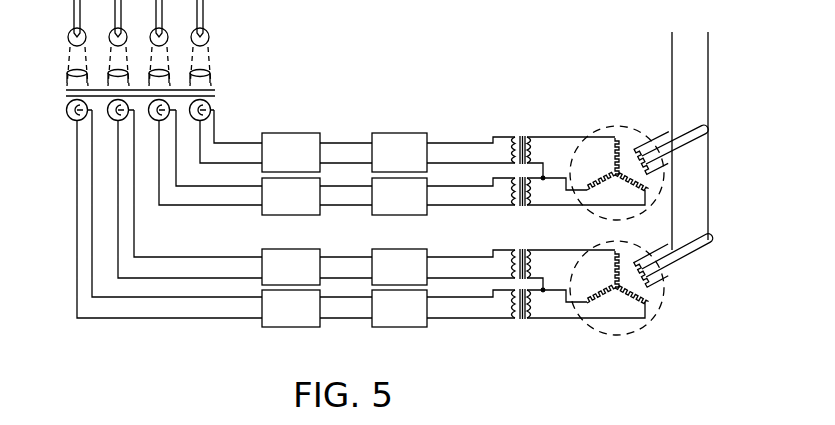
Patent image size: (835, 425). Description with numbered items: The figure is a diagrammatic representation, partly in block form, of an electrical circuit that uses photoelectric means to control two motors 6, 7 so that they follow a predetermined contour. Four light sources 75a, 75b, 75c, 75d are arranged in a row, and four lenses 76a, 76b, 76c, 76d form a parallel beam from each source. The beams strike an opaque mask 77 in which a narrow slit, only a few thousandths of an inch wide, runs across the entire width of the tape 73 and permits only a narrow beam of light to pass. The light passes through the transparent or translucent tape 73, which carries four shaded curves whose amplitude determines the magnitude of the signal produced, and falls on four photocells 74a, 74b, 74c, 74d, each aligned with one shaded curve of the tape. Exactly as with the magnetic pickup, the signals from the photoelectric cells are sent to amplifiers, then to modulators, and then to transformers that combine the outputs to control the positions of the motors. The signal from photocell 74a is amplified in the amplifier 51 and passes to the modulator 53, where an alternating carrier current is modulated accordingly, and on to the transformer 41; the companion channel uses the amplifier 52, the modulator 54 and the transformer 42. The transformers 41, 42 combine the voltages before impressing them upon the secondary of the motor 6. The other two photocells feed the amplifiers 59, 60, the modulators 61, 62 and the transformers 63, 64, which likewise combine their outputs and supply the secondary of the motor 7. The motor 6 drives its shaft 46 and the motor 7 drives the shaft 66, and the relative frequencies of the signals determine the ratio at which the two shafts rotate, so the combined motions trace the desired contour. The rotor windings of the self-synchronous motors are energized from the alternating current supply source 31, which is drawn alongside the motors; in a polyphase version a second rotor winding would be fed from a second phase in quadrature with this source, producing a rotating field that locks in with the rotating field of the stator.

The light source 75a is at (207, 33).
The light source 75b is at (160, 30).
The light source 75c is at (115, 32).
The light source 75d is at (67, 35).
The lens 76a is at (208, 72).
The lens 76b is at (162, 68).
The lens 76c is at (112, 68).
The lens 76d is at (67, 72).
The opaque mask 77 is at (217, 91).
The tape 73 is at (217, 98).
The photoelectric cell 74a is at (212, 119).
The photoelectric cell 74b is at (158, 125).
The photoelectric cell 74c is at (108, 123).
The photoelectric cell 74d is at (67, 122).
The amplifier 51 is at (297, 133).
The amplifier 52 is at (287, 215).
The amplifier 59 is at (293, 246).
The amplifier 60 is at (277, 328).
The modulator 53 is at (410, 133).
The modulator 54 is at (393, 215).
The modulator 61 is at (400, 249).
The modulator 62 is at (392, 328).
The transformer 41 is at (522, 131).
The transformer 42 is at (523, 207).
The transformer 63 is at (522, 249).
The transformer 64 is at (520, 320).
The motor 6 is at (645, 211).
The motor 7 is at (648, 322).
The shaft 46 is at (694, 126).
The shaft 66 is at (686, 244).
The alternating current supply source 31 is at (703, 65).